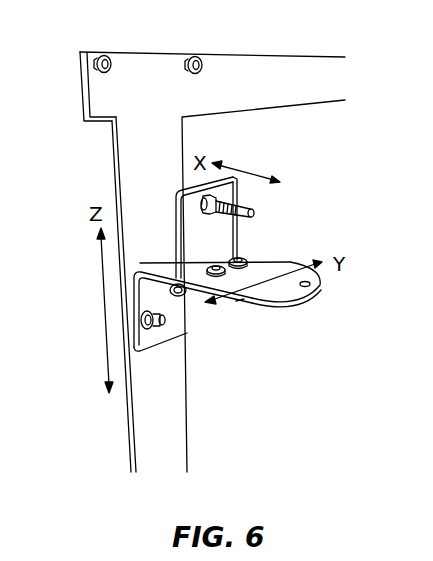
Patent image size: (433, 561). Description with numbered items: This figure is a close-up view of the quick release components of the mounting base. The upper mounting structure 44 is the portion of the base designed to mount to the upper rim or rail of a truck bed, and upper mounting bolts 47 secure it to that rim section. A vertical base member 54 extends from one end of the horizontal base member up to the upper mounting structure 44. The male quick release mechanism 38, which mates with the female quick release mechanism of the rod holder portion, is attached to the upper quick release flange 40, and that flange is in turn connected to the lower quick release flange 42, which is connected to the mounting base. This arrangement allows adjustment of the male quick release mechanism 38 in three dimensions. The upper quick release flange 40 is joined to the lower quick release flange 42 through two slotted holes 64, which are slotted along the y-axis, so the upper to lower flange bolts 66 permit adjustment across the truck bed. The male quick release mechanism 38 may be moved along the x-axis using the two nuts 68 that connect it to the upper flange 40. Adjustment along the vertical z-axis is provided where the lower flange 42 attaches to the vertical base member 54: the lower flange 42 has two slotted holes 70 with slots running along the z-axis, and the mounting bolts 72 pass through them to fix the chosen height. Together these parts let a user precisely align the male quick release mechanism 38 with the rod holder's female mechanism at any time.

The male quick release mechanism 38 is at (256, 208).
The upper quick release flange 40 is at (192, 236).
The lower quick release flange 42 is at (150, 292).
The upper mounting structure 44 is at (291, 66).
The upper mounting bolts 47 is at (112, 63).
The vertical base member 54 is at (150, 428).
The slotted holes 64 is at (240, 300).
The upper to lower flange bolts 66 is at (242, 259).
The nuts 68 is at (215, 266).
The slotted holes 70 is at (142, 320).
The mounting bolts 72 is at (157, 326).